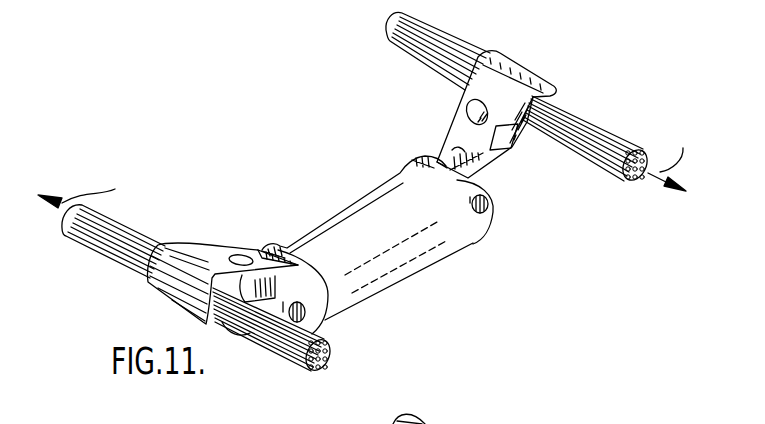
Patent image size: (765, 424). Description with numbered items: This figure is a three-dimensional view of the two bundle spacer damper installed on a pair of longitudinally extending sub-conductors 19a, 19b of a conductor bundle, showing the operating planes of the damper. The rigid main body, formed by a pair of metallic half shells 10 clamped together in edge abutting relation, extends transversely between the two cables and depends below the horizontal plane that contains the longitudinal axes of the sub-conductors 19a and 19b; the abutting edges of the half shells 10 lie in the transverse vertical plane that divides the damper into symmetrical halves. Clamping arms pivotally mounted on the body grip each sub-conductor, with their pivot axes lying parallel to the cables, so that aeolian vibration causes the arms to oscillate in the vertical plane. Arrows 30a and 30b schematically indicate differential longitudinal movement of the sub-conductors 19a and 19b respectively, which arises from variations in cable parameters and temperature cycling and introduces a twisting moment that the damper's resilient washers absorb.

The half shells 10 is at (348, 209).
The sub-conductor 19a is at (283, 353).
The sub-conductor 19b is at (610, 139).
The arrow 30a is at (87, 185).
The arrow 30b is at (676, 159).